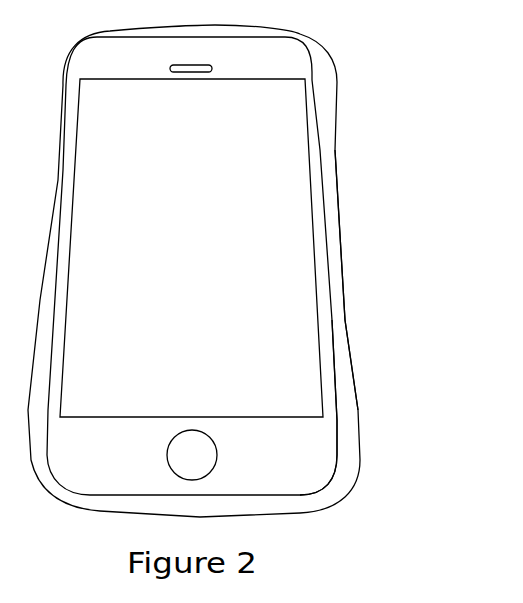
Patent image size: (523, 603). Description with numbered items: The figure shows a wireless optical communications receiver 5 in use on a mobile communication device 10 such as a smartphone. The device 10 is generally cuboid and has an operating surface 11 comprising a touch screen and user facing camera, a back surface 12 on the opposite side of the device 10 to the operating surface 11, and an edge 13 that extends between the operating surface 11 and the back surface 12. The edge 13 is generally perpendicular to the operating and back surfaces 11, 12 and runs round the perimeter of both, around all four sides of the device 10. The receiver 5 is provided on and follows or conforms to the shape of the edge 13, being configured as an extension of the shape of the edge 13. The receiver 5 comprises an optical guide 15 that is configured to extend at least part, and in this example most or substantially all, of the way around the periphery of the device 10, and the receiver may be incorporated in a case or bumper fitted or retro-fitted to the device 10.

The wireless optical communications receiver 5 is at (324, 120).
The mobile communication device 10 is at (282, 188).
The operating surface 11 is at (293, 390).
The back surface 12 is at (246, 276).
The edge 13 is at (337, 432).
The optical guide 15 is at (333, 322).